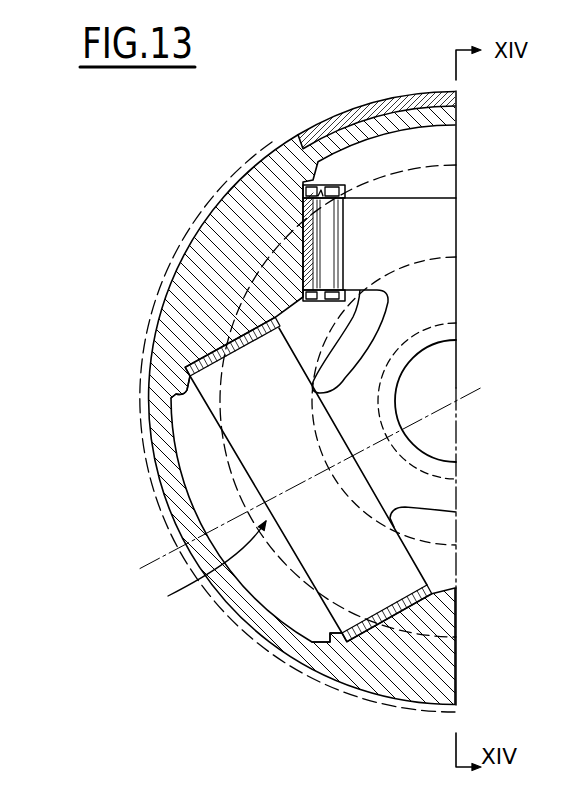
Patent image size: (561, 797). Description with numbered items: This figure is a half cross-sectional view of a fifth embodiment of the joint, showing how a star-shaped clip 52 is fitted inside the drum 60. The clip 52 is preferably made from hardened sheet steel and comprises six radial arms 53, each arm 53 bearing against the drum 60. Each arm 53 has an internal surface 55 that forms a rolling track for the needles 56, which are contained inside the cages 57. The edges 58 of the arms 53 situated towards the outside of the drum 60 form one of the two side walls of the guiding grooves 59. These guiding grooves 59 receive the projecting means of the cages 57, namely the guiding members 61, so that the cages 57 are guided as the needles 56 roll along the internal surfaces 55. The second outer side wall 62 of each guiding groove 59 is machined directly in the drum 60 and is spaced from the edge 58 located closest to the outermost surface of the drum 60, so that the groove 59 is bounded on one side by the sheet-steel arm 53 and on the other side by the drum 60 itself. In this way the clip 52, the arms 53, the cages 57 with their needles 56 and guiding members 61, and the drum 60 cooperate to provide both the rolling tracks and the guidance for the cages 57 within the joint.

The star-shaped clip 52 is at (218, 567).
The radial arm 53 is at (370, 197).
The internal surface 55 is at (248, 357).
The needles 56 is at (327, 228).
The cage 57 is at (318, 300).
The edge 58 is at (291, 159).
The guiding groove 59 is at (185, 392).
The drum 60 is at (180, 527).
The guiding member 61 is at (318, 185).
The second outer side wall 62 is at (311, 178).